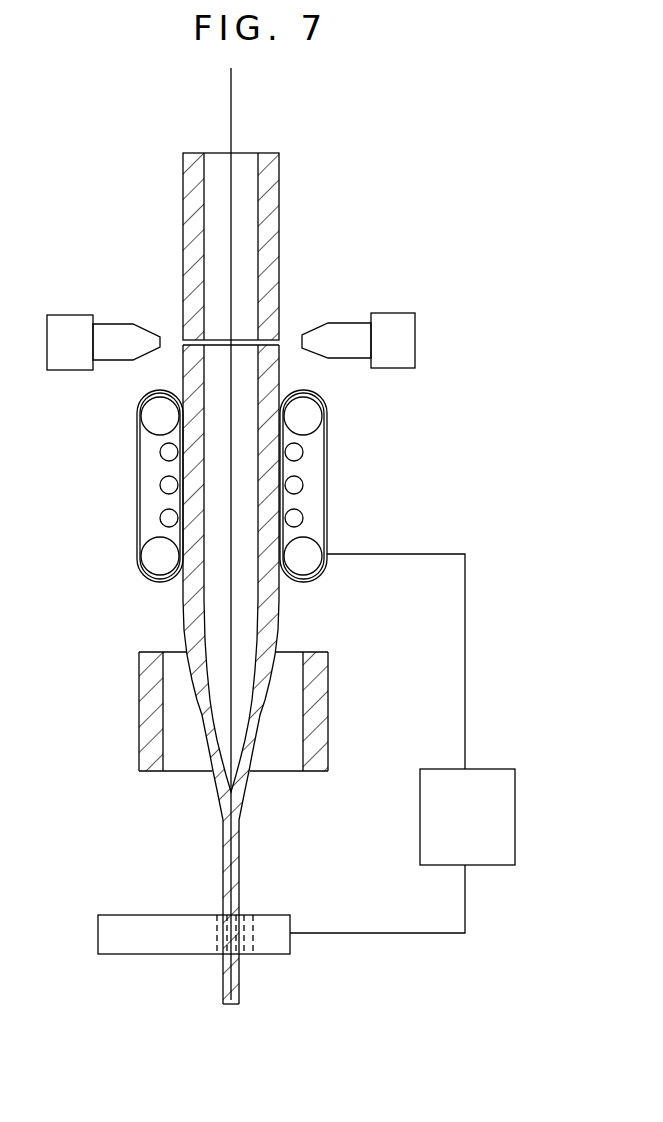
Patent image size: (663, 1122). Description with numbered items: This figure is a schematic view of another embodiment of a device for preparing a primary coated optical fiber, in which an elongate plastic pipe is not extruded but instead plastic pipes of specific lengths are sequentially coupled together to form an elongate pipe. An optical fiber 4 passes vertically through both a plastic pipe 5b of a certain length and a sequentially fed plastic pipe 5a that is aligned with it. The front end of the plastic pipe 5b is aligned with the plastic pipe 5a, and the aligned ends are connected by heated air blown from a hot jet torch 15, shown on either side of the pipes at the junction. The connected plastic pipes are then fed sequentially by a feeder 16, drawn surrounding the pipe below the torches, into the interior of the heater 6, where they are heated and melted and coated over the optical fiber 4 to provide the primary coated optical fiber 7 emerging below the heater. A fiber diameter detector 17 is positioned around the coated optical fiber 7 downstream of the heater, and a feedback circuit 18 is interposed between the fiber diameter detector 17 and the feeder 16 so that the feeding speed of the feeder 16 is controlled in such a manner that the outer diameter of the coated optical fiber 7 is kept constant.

The optical fiber 4 is at (231, 103).
The plastic pipe 5a is at (277, 637).
The plastic pipe 5b is at (273, 242).
The heater 6 is at (328, 687).
The primary coated optical fiber 7 is at (240, 863).
The hot jet torch 15 is at (348, 327).
The feeder 16 is at (328, 463).
The fiber diameter detector 17 is at (262, 915).
The feedback circuit 18 is at (515, 850).